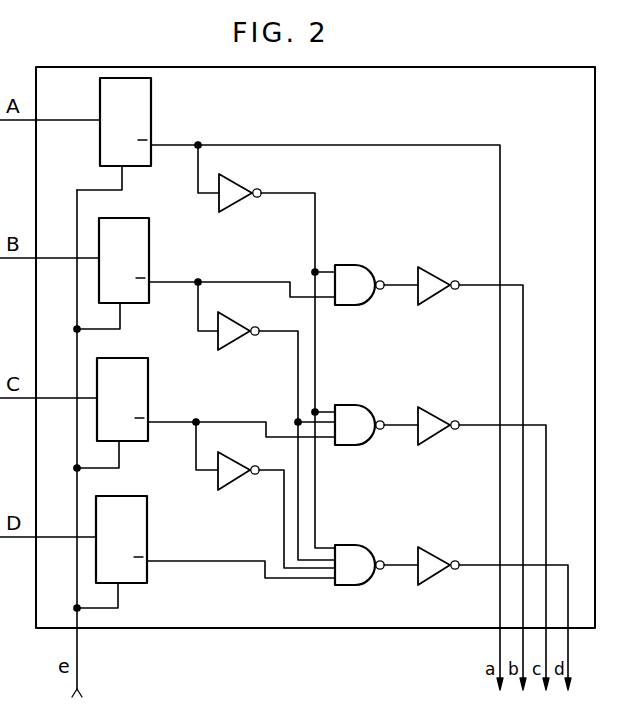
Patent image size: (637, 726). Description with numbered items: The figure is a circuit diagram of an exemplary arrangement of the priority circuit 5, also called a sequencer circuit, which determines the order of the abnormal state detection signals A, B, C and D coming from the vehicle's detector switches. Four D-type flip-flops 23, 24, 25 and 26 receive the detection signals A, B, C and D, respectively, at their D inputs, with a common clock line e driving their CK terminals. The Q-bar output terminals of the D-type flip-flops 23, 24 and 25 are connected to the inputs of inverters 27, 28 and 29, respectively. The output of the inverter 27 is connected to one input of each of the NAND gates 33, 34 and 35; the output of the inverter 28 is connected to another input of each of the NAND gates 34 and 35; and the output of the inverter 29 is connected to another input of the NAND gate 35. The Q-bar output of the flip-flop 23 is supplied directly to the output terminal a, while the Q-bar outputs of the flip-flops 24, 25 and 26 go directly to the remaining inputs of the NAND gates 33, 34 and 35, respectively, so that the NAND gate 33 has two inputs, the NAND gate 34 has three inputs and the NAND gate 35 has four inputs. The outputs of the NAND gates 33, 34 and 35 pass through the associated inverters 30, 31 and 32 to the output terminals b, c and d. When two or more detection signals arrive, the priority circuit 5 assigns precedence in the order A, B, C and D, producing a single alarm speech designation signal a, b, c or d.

The priority circuit 5 is at (88, 56).
The D-type flip-flop 23 is at (100, 96).
The D-type flip-flop 24 is at (149, 245).
The D-type flip-flop 25 is at (148, 385).
The D-type flip-flop 26 is at (147, 527).
The inverter 27 is at (232, 178).
The inverter 28 is at (222, 314).
The inverter 29 is at (243, 456).
The inverter 30 is at (434, 274).
The inverter 31 is at (434, 413).
The inverter 32 is at (434, 553).
The NAND gate 33 is at (362, 265).
The NAND gate 34 is at (362, 405).
The NAND gate 35 is at (362, 545).